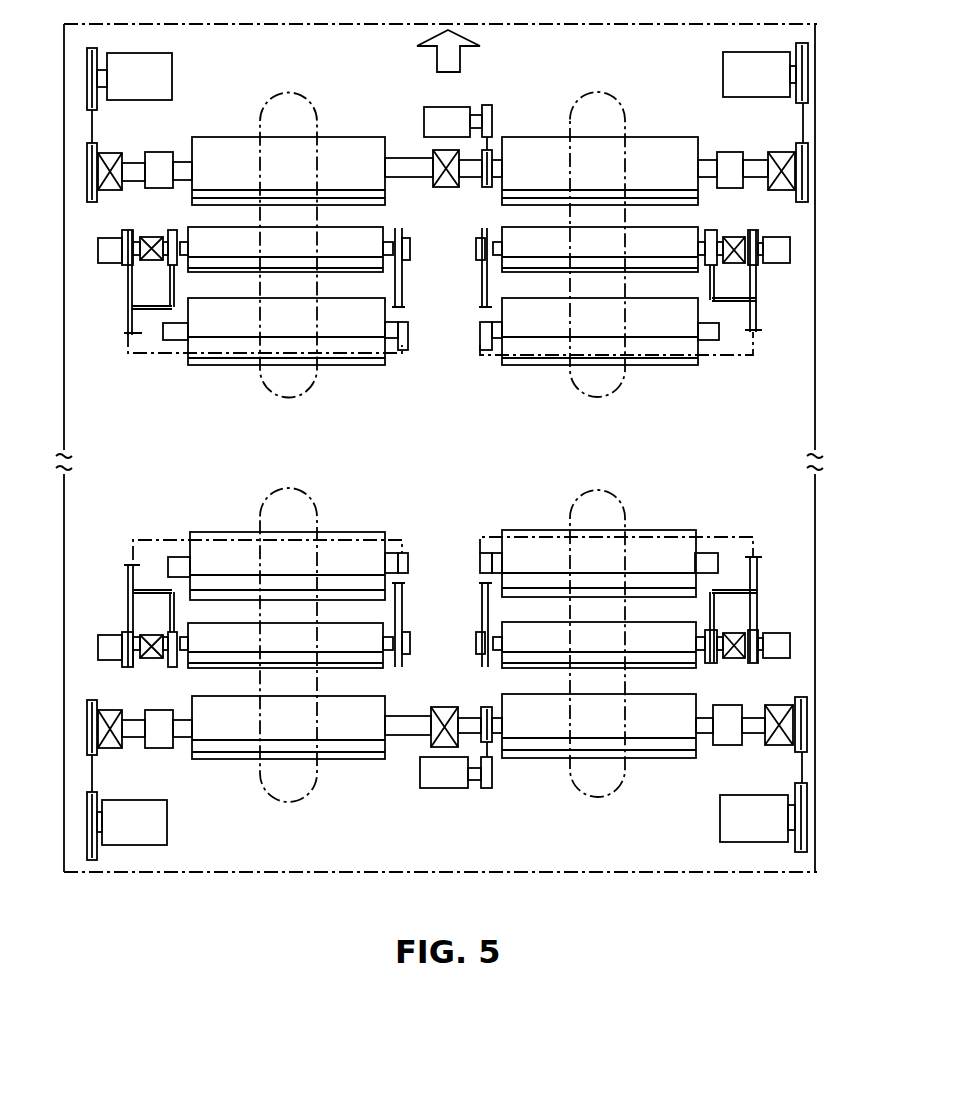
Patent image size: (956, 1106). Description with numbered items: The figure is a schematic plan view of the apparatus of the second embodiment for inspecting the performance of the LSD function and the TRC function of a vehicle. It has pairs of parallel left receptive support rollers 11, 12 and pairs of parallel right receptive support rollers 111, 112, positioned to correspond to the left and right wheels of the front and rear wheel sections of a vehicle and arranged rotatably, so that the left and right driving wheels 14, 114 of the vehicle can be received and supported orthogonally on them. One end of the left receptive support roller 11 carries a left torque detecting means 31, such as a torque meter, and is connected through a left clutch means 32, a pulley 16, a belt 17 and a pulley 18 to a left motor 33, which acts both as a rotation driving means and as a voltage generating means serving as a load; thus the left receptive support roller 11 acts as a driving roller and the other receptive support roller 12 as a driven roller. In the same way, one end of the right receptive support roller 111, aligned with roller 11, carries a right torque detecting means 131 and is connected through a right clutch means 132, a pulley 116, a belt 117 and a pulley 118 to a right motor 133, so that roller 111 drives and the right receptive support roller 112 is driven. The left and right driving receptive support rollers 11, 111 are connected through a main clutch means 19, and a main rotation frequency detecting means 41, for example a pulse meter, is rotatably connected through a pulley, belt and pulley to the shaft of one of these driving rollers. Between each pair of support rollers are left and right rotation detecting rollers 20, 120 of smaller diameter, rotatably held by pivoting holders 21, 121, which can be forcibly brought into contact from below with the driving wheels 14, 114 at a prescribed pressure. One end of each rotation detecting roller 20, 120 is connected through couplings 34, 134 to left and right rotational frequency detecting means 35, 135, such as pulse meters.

The left receptive support roller 11 is at (350, 150).
The left receptive support roller 12 is at (332, 347).
The left driving wheel 14 is at (329, 93).
The pulley 16 is at (85, 183).
The belt 17 is at (93, 128).
The pulley 18 is at (85, 65).
The main clutch means 19 is at (443, 187).
The left rotation detecting roller 20 is at (325, 232).
The pivoting holder 21 is at (125, 295).
The left torque detecting means 31 is at (158, 188).
The left clutch means 32 is at (120, 155).
The left motor 33 is at (172, 65).
The coupling 34 is at (152, 262).
The left rotational frequency detecting means 35 is at (100, 250).
The main rotation frequency detecting means 41 is at (443, 108).
The right receptive support roller 111 is at (643, 137).
The right receptive support roller 112 is at (668, 345).
The right driving wheel 114 is at (600, 93).
The pulley 116 is at (808, 195).
The belt 117 is at (803, 128).
The pulley 118 is at (808, 48).
The right rotation detecting roller 120 is at (640, 233).
The pivoting holder 121 is at (483, 270).
The right torque detecting means 131 is at (728, 188).
The right clutch means 132 is at (810, 165).
The right motor 133 is at (723, 65).
The coupling 134 is at (740, 235).
The right rotational frequency detecting means 135 is at (775, 262).